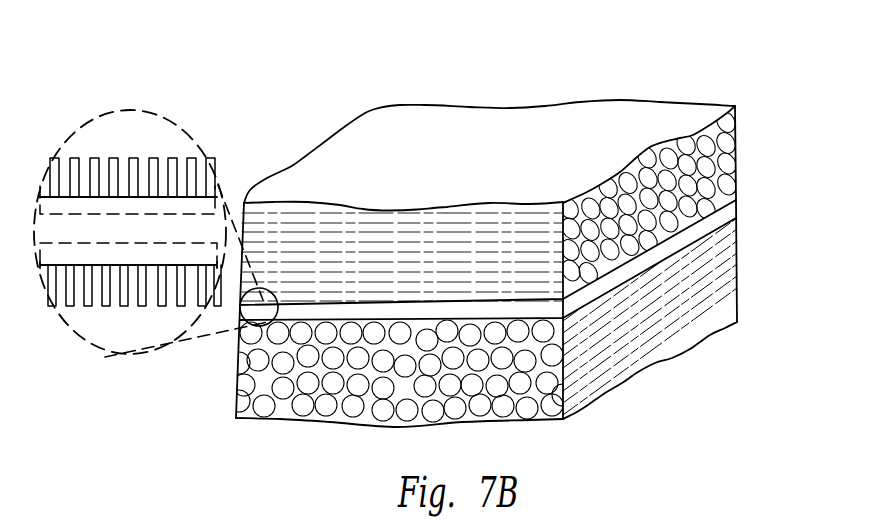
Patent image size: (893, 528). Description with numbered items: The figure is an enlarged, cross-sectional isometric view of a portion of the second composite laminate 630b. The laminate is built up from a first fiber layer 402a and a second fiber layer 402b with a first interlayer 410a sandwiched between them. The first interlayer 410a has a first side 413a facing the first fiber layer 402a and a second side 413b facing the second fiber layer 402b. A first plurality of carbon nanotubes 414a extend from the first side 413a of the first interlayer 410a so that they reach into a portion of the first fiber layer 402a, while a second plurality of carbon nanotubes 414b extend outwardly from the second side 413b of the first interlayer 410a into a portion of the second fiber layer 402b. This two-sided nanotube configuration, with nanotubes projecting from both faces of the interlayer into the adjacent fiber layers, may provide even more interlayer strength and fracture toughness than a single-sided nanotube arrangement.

The second composite laminate 630b is at (384, 64).
The first fiber layer 402a is at (643, 358).
The second fiber layer 402b is at (168, 138).
The first interlayer 410a is at (198, 205).
The first side 413a is at (278, 323).
The second side 413b is at (273, 303).
The first plurality of carbon nanotubes 414a is at (150, 307).
The second plurality of carbon nanotubes 414b is at (107, 167).